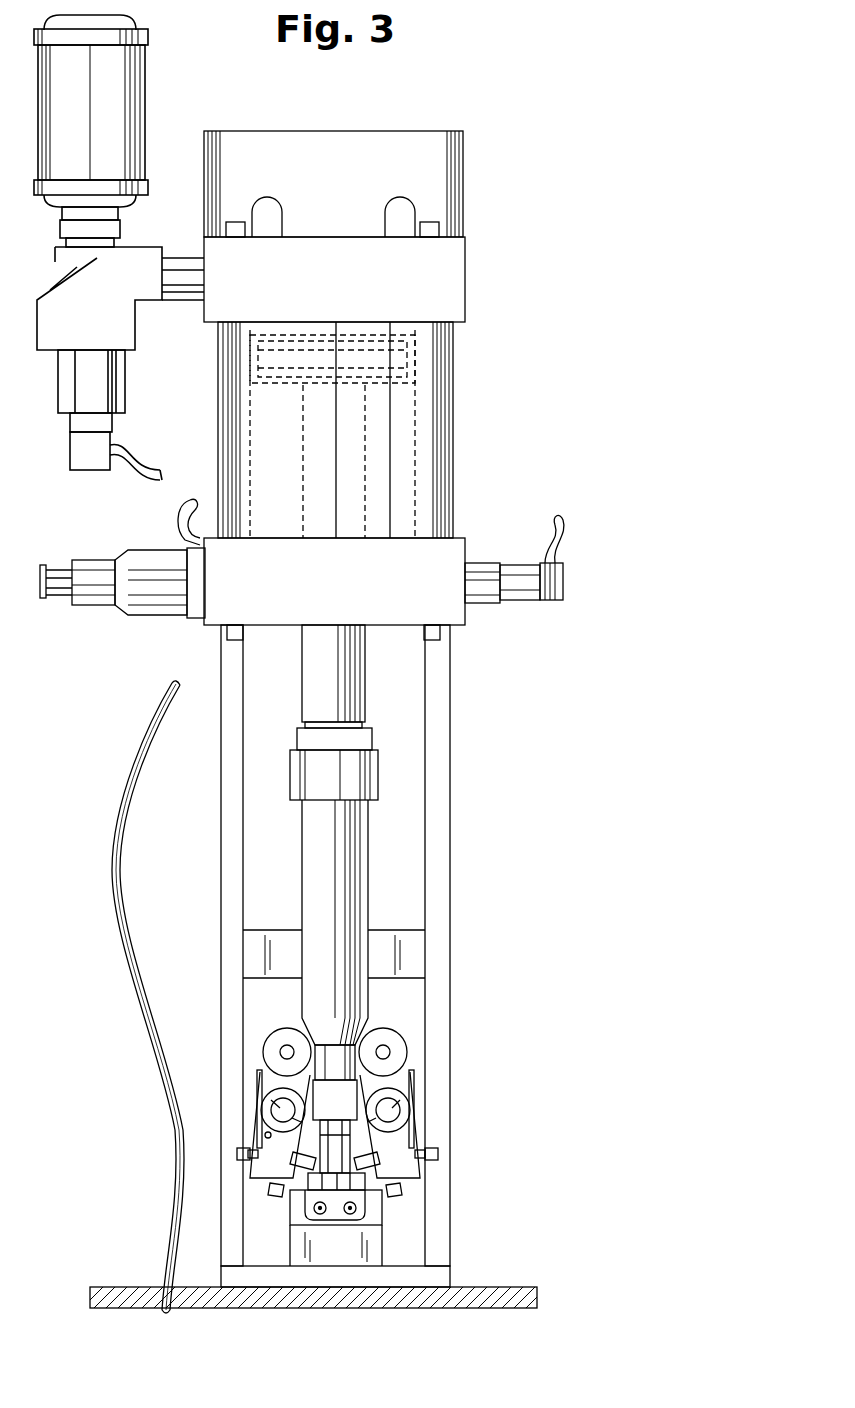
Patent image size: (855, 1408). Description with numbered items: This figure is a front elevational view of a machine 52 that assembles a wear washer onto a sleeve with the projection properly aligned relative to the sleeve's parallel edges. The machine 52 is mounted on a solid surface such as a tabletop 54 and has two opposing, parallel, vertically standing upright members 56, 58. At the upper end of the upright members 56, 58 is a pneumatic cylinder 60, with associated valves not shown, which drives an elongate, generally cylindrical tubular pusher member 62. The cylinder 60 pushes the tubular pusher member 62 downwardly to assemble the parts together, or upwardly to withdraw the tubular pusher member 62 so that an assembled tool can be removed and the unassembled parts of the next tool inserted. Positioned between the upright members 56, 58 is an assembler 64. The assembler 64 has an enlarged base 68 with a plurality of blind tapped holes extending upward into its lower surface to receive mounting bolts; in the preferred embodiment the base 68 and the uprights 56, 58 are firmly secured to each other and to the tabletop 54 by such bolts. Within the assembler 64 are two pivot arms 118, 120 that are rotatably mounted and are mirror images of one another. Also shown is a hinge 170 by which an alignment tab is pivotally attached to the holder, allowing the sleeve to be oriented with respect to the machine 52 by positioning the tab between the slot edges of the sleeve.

The machine 52 is at (346, 385).
The tabletop 54 is at (515, 1287).
The upright member 56 is at (221, 762).
The upright member 58 is at (452, 860).
The pneumatic cylinder 60 is at (452, 487).
The tubular pusher member 62 is at (368, 820).
The assembler 64 is at (380, 1131).
The base 68 is at (450, 1270).
The pivot arm 118 is at (405, 1068).
The pivot arm 120 is at (265, 1058).
The hinge 170 is at (290, 1175).